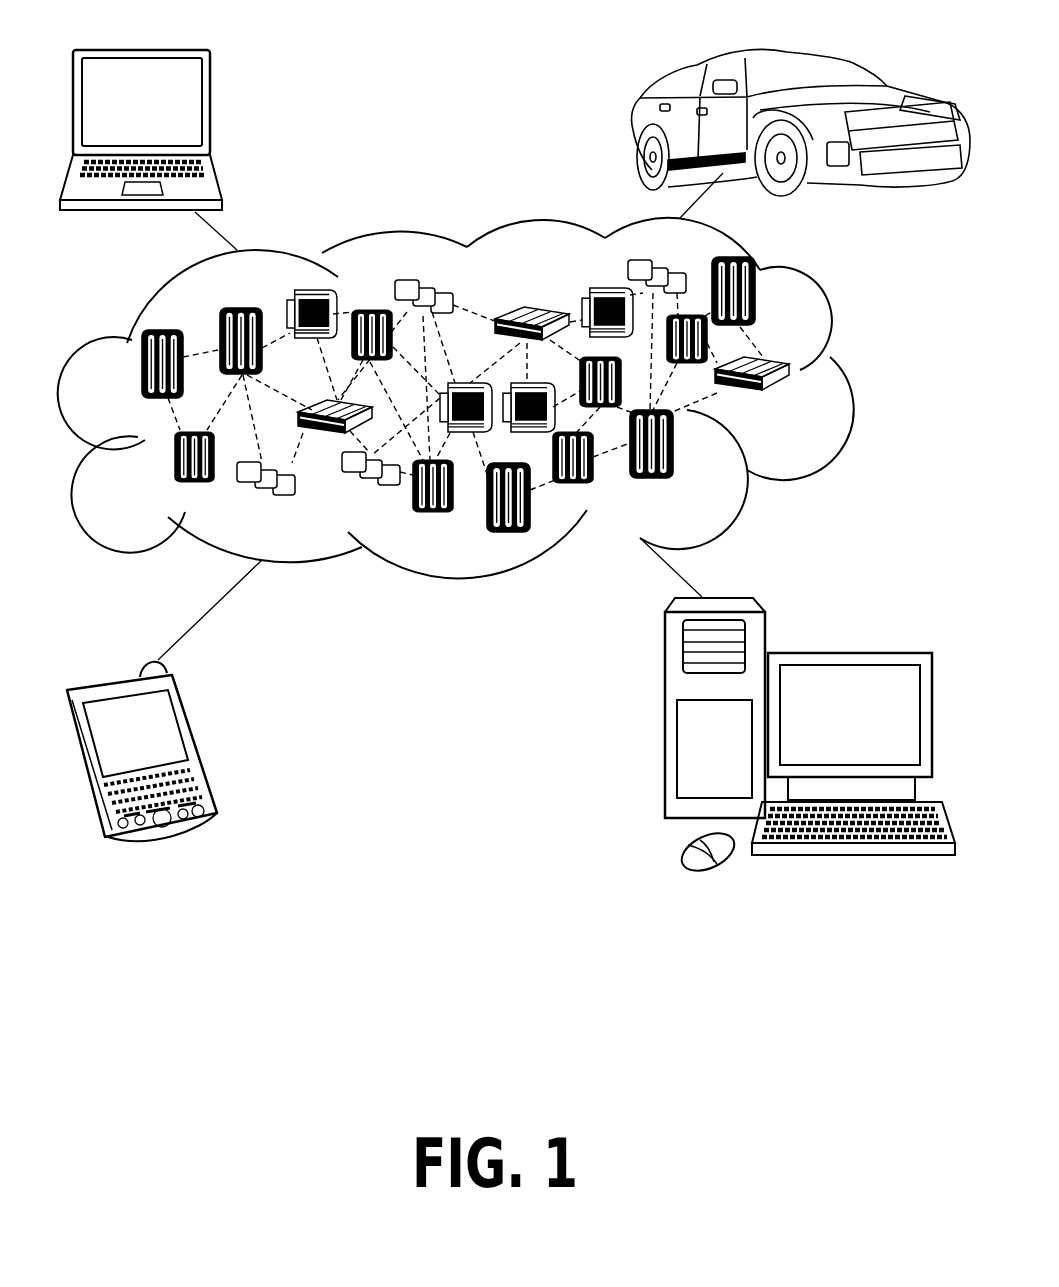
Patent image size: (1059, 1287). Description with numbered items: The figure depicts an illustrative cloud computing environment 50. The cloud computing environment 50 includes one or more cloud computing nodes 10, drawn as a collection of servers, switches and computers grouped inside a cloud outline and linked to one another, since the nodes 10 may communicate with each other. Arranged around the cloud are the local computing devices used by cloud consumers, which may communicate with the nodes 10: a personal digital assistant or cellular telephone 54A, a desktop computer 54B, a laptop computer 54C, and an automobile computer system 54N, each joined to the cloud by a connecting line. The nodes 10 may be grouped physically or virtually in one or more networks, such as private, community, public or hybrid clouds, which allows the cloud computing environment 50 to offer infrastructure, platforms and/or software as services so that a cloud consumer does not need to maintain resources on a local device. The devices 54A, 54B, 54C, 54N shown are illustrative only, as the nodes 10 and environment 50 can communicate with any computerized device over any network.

The cloud computing node 10 is at (796, 404).
The cloud computing environment 50 is at (851, 375).
The personal digital assistant or cellular telephone 54A is at (202, 747).
The desktop computer 54B is at (848, 652).
The laptop computer 54C is at (210, 110).
The automobile computer system 54N is at (637, 125).